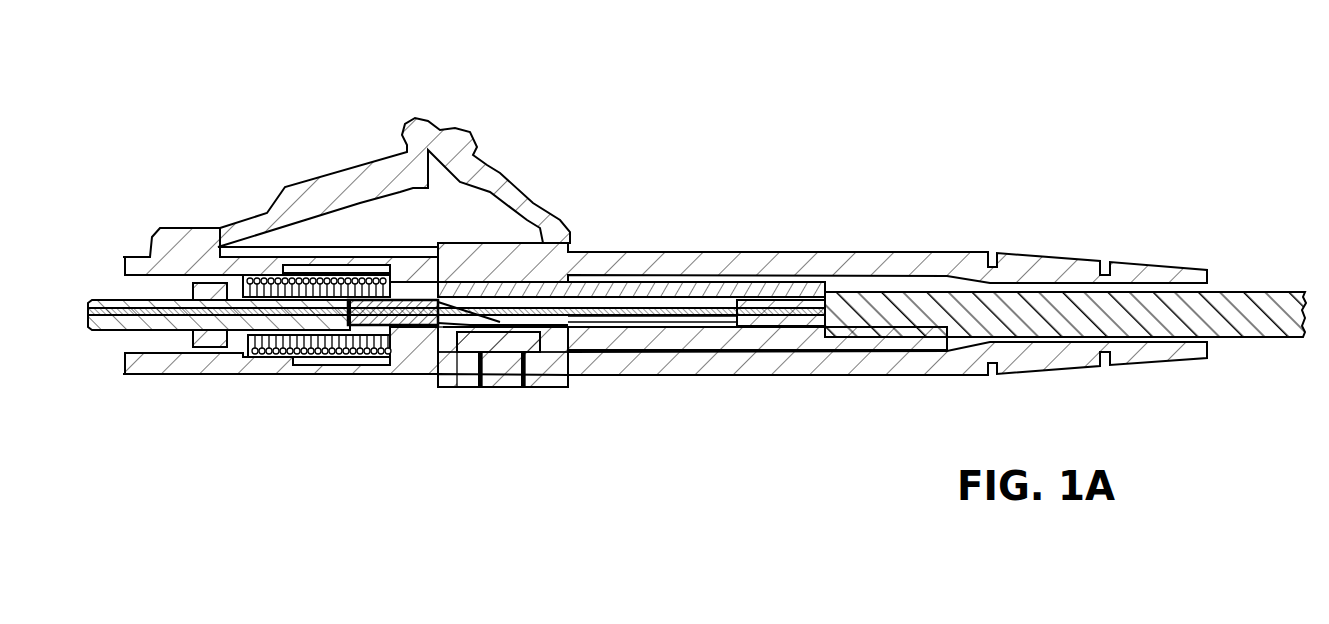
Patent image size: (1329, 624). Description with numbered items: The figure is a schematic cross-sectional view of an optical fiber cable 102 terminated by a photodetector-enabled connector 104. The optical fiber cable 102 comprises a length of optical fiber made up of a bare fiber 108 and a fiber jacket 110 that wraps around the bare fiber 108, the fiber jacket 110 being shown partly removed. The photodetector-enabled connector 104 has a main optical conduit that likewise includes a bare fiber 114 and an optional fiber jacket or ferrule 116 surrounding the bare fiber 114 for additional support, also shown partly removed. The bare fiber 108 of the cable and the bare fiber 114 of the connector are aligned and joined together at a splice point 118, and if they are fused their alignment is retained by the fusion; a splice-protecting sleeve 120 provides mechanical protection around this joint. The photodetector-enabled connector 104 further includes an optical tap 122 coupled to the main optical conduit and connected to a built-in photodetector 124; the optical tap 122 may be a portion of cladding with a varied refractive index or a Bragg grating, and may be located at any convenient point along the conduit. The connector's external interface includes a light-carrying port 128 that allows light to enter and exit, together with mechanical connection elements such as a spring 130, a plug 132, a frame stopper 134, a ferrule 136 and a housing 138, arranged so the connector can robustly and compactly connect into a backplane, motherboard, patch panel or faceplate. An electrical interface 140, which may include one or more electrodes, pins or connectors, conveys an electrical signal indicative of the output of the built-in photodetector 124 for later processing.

The optical fiber cable 102 is at (1293, 323).
The photodetector-enabled connector 104 is at (220, 90).
The bare fiber 108 is at (692, 318).
The fiber jacket 110 is at (760, 313).
The bare fiber 114 is at (528, 307).
The ferrule 116 is at (372, 312).
The splice point 118 is at (595, 305).
The splice-protecting sleeve 120 is at (620, 323).
The optical tap 122 is at (457, 314).
The built-in photodetector 124 is at (466, 354).
The light-carrying port 128 is at (93, 328).
The spring 130 is at (300, 347).
The plug 132 is at (208, 300).
The frame stopper 134 is at (348, 265).
The ferrule 136 is at (107, 300).
The housing 138 is at (147, 347).
The electrical interface 140 is at (482, 393).